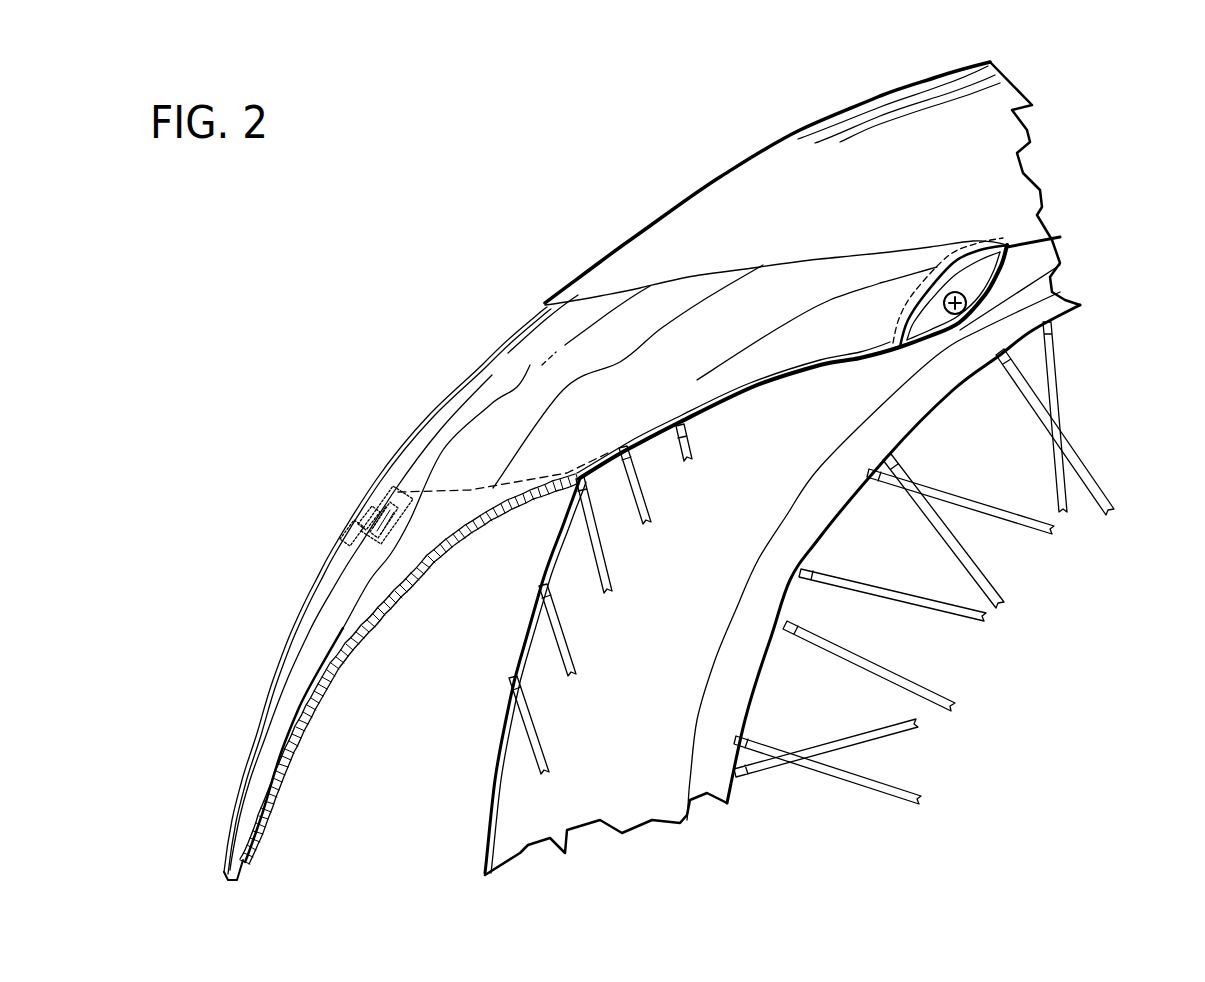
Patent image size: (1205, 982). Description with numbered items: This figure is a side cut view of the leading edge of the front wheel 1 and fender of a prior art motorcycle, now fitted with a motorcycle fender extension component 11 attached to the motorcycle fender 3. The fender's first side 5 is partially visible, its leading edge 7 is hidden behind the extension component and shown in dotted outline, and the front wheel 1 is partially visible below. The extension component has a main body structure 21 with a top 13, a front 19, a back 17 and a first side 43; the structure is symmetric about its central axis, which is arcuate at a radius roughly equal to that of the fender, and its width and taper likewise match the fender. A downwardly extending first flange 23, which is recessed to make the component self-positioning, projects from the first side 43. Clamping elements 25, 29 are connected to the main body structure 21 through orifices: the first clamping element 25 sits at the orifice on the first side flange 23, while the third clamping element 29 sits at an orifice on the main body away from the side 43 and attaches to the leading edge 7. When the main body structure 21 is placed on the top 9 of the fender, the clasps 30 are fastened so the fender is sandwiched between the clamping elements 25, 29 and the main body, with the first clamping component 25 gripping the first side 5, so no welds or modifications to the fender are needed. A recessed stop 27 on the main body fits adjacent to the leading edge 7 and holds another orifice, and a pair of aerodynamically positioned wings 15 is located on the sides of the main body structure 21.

The front wheel 1 is at (492, 655).
The motorcycle fender 3 is at (720, 195).
The first side 5 is at (1047, 260).
The leading edge 7 is at (376, 487).
The top 9 is at (833, 115).
The motorcycle fender extension component 11 is at (468, 340).
The top 13 is at (308, 633).
The aerodynamically positioned wings 15 is at (286, 744).
The back 17 is at (975, 240).
The front 19 is at (222, 870).
The main body structure 21 is at (575, 358).
The first flange 23 is at (880, 340).
The first clamping element 25 is at (950, 294).
The recessed stop 27 is at (350, 526).
The third clamping element 29 is at (366, 512).
The clasps 30 is at (398, 480).
The first side 43 is at (873, 357).